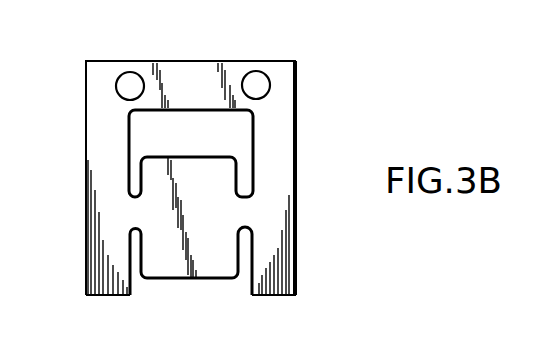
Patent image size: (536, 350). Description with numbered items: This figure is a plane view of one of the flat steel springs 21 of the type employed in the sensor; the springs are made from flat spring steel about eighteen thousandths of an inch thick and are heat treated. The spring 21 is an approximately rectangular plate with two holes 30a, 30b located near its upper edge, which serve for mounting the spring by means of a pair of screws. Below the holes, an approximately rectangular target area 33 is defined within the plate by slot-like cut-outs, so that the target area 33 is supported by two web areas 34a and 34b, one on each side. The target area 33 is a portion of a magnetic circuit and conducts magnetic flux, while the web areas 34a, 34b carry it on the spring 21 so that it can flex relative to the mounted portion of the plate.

The flat steel spring 21 is at (297, 104).
The mounting hole 30a is at (130, 71).
The mounting hole 30b is at (257, 70).
The target area 33 is at (233, 156).
The web area 34a is at (133, 212).
The web area 34b is at (250, 213).